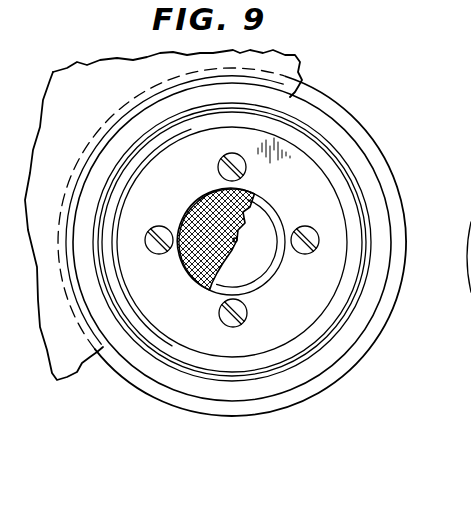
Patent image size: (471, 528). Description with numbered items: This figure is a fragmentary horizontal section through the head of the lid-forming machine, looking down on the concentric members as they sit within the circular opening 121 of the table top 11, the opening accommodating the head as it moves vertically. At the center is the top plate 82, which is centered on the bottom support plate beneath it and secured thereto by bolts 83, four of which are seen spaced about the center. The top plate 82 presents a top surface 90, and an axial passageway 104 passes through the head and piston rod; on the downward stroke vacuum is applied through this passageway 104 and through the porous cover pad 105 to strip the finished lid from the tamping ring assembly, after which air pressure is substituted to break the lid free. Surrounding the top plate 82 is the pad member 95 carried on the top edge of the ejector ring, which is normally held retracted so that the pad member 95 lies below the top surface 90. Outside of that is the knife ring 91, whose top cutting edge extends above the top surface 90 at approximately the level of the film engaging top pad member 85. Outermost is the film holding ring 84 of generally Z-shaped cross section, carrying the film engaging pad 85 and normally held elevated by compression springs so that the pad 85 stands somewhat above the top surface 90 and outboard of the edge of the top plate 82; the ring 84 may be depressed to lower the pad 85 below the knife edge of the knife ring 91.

The table top 11 is at (77, 77).
The circular opening 121 is at (297, 97).
The pad member 95 is at (312, 147).
The knife ring 91 is at (338, 158).
The film engaging top pad member 85 is at (370, 182).
The top surface 90 is at (333, 220).
The film holding ring 84 is at (404, 245).
The bolts 83 is at (300, 227).
The porous cover pad 105 is at (202, 198).
The axial passageway 104 is at (236, 243).
The top plate 82 is at (313, 303).